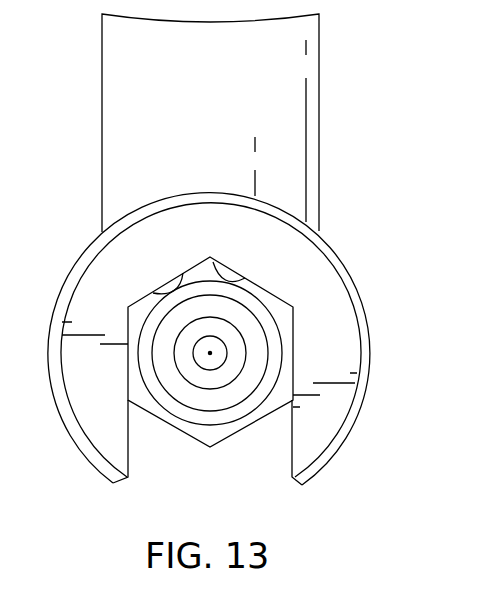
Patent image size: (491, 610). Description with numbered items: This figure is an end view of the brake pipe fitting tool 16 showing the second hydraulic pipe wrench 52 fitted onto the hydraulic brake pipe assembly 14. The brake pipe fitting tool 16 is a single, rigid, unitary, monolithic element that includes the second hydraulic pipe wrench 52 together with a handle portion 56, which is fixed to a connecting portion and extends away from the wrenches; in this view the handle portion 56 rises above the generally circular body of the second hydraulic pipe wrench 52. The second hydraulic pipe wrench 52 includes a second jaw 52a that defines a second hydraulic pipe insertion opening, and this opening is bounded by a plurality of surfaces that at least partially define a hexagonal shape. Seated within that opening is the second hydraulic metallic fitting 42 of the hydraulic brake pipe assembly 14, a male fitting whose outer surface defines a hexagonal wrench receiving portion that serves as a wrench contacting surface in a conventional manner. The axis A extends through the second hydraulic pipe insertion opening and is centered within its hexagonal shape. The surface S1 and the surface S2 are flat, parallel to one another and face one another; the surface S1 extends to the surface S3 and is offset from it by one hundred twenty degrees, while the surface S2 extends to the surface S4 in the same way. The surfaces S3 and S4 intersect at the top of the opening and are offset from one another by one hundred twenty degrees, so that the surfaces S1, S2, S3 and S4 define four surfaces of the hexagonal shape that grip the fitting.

The brake pipe fitting tool 16 is at (380, 139).
The handle portion 56 is at (136, 103).
The second hydraulic pipe wrench 52 is at (107, 290).
The second jaw 52a is at (128, 457).
The second hydraulic metallic fitting 42 is at (243, 429).
The hydraulic brake pipe assembly 14 is at (195, 439).
The axis A is at (210, 353).
The surface S1 is at (128, 440).
The surface S2 is at (292, 440).
The surface S3 is at (183, 272).
The surface S4 is at (211, 257).